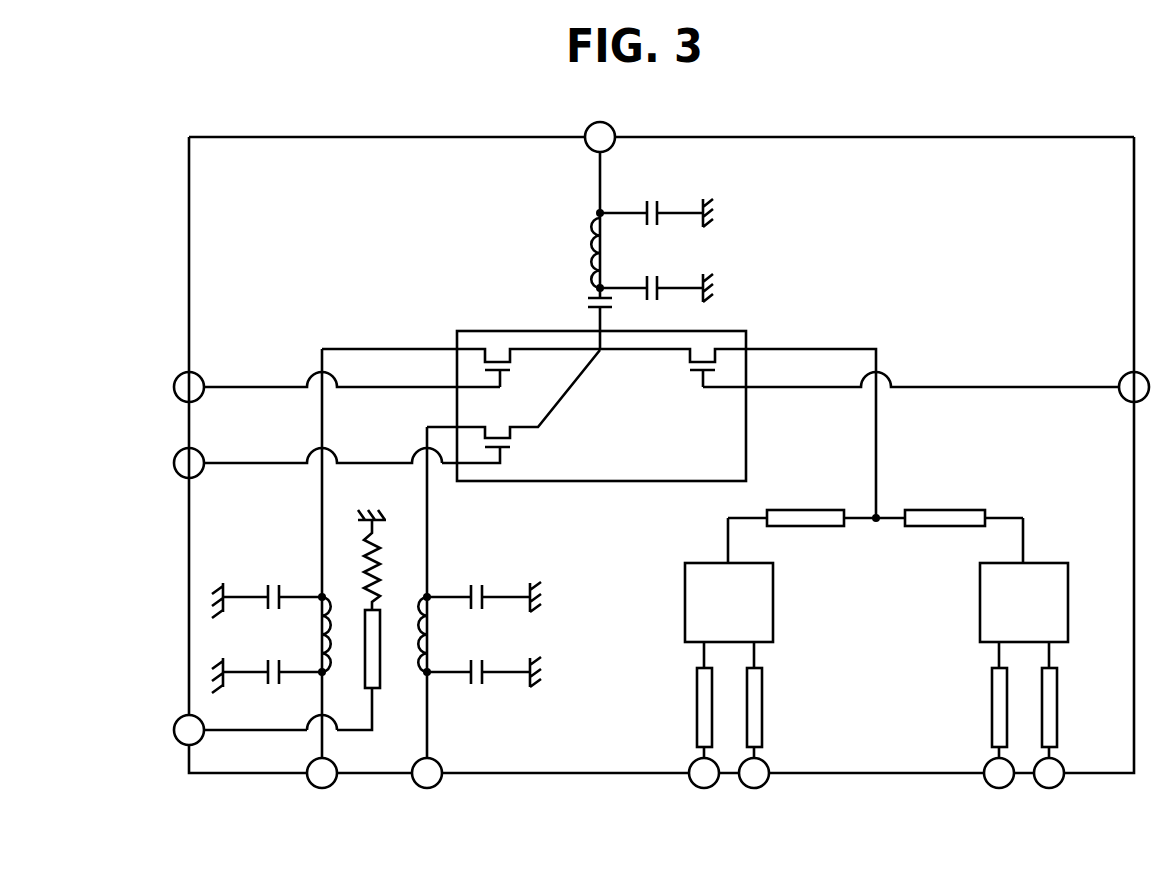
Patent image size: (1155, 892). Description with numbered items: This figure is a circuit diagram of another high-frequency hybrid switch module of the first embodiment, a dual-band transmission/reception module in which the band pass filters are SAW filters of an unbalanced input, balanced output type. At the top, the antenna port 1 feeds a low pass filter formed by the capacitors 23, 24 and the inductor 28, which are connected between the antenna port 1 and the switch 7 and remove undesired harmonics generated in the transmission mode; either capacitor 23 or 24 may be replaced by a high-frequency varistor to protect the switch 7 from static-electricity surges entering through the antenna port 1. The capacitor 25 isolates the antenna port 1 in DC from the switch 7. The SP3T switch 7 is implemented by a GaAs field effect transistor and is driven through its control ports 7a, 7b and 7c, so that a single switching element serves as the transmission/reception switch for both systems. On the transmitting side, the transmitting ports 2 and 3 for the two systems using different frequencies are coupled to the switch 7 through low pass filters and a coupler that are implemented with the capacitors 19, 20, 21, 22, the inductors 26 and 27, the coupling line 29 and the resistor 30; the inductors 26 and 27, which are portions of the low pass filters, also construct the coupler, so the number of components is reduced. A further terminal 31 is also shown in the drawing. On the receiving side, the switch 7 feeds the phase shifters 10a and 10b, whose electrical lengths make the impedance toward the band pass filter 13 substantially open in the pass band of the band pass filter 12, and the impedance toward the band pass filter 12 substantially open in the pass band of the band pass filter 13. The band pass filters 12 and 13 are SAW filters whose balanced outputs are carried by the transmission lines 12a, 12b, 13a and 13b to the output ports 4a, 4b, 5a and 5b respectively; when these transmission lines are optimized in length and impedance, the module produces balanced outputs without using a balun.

The antenna port 1 is at (611, 127).
The transmitting port 2 is at (322, 788).
The transmitting port 3 is at (427, 788).
The output port 4a is at (692, 762).
The output port 4b is at (764, 762).
The output port 5a is at (987, 762).
The output port 5b is at (1059, 762).
The SP3T switch 7 is at (746, 331).
The control port 7a is at (201, 376).
The control port 7b is at (201, 452).
The control port 7c is at (1122, 377).
The phase shifter 10a is at (800, 510).
The phase shifter 10b is at (940, 510).
The band pass filter 12 is at (773, 586).
The transmission line 12a is at (697, 696).
The transmission line 12b is at (762, 696).
The band pass filter 13 is at (980, 600).
The transmission line 13a is at (992, 696).
The transmission line 13b is at (1057, 696).
The capacitor 19 is at (272, 688).
The capacitor 20 is at (268, 585).
The capacitor 21 is at (476, 686).
The capacitor 22 is at (473, 585).
The capacitor 23 is at (650, 276).
The capacitor 24 is at (650, 200).
The capacitor 25 is at (588, 302).
The inductor 26 is at (318, 620).
The inductor 27 is at (420, 660).
The inductor 28 is at (594, 243).
The coupling line 29 is at (382, 640).
The resistor 30 is at (374, 552).
The control terminal 31 is at (203, 740).